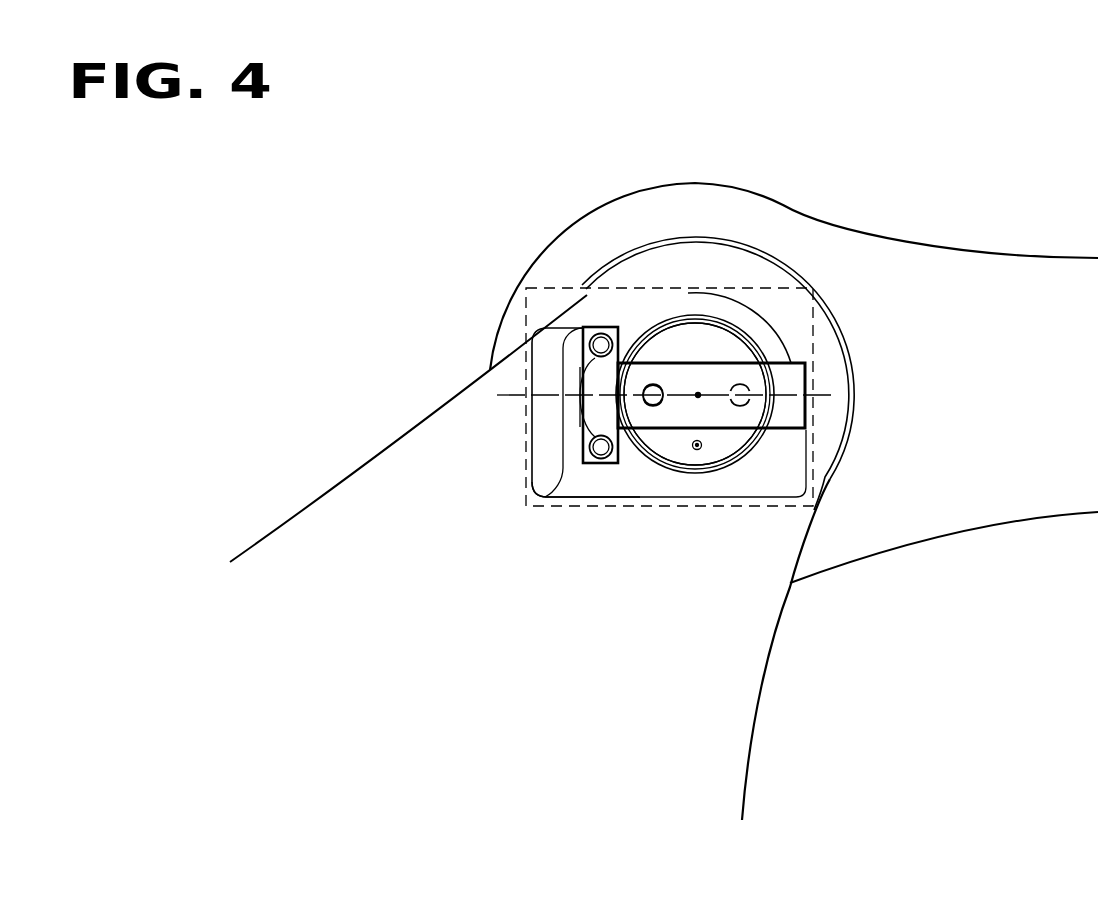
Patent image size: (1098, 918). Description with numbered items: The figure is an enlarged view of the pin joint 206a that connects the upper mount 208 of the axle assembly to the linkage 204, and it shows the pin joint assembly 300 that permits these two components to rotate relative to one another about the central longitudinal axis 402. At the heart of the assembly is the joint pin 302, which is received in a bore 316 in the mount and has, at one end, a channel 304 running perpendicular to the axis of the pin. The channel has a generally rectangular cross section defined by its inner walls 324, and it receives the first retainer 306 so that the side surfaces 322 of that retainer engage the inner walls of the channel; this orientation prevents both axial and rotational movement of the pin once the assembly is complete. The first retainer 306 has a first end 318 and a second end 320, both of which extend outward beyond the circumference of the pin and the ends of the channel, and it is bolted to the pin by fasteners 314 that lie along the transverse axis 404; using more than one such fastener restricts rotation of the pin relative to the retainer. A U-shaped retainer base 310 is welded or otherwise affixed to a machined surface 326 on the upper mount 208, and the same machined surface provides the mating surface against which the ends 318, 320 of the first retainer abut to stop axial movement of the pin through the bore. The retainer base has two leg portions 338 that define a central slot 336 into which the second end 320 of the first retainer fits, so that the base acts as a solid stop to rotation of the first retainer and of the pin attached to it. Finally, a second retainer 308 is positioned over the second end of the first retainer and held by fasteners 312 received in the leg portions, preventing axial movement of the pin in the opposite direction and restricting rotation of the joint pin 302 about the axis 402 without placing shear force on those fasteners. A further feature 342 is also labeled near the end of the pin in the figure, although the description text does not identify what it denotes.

The linkage 204 is at (973, 522).
The pin joint 206a is at (738, 363).
The upper mount 208 is at (410, 428).
The pin joint assembly 300 is at (811, 373).
The joint pin 302 is at (707, 333).
The channel 304 is at (660, 362).
The first retainer 306 is at (749, 338).
The second retainer 308 is at (586, 328).
The retainer base 310 is at (560, 350).
The fasteners 312 is at (578, 430).
The fasteners 314 is at (714, 420).
The bore 316 is at (805, 570).
The first end 318 is at (808, 418).
The second end 320 is at (655, 408).
The side surfaces 322 is at (745, 350).
The inner walls 324 is at (785, 363).
The machined surface 326 is at (593, 487).
The central slot 336 is at (583, 443).
The leg portions 338 is at (565, 328).
The inner circle 342 is at (691, 328).
The central longitudinal axis 402 is at (700, 450).
The transverse axis 404 is at (831, 396).